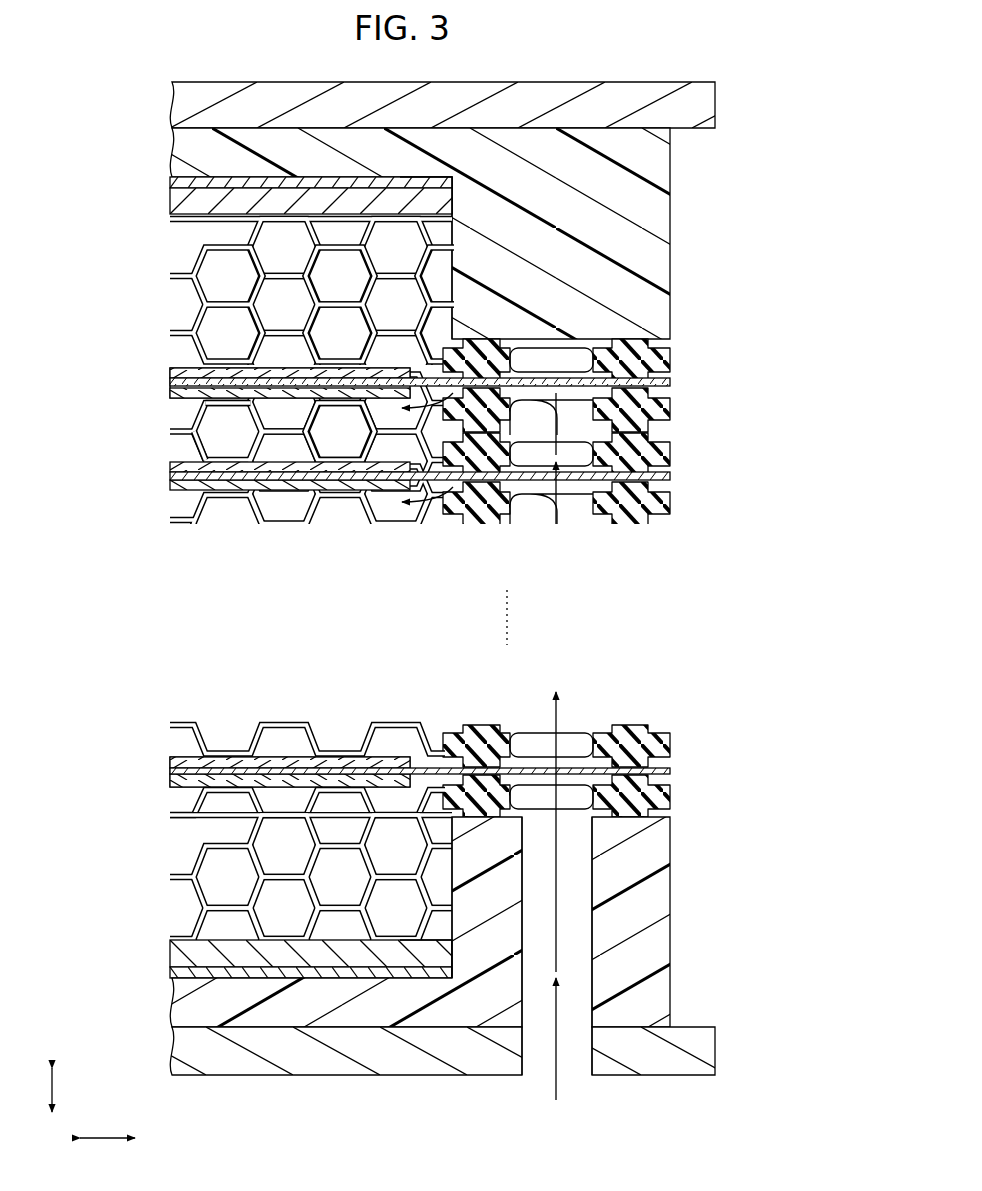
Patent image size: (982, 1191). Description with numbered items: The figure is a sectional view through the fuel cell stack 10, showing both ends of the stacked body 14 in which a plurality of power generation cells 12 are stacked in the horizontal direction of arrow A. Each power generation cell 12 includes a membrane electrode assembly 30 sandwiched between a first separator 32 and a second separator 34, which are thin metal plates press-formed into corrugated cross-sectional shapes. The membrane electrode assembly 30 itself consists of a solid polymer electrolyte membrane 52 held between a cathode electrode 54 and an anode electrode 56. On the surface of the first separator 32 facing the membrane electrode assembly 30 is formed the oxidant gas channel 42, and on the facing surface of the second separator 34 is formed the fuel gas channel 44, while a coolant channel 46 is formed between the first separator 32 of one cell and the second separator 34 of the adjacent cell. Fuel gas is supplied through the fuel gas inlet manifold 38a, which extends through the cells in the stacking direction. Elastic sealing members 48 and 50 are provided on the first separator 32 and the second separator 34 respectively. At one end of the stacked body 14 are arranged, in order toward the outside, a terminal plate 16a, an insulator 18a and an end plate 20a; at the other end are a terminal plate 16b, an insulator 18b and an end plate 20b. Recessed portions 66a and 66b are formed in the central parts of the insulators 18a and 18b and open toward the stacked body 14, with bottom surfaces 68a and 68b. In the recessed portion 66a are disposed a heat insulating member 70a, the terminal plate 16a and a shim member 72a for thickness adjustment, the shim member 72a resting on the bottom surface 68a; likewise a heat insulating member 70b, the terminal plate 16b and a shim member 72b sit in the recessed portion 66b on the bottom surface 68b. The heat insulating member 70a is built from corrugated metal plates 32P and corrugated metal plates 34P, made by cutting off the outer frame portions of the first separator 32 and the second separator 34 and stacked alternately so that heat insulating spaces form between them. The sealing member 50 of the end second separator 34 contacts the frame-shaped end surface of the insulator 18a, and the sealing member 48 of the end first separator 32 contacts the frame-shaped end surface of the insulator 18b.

The fuel cell stack 10 is at (481, 61).
The power generation cell 12 is at (391, 567).
The stacked body 14 is at (372, 567).
The terminal plate 16a is at (171, 956).
The terminal plate 16b is at (171, 201).
The insulator 18a is at (676, 941).
The insulator 18b is at (676, 257).
The end plate 20a is at (716, 1026).
The end plate 20b is at (718, 131).
The membrane electrode assembly 30 is at (409, 567).
The first separator 32 is at (190, 353).
The second separator 34 is at (190, 412).
The corrugated metal plate 32P is at (190, 236).
The corrugated metal plate 34P is at (186, 261).
The fuel gas inlet manifold 38a is at (573, 1055).
The oxidant gas channel 42 is at (243, 406).
The fuel gas channel 44 is at (237, 412).
The coolant channel 46 is at (362, 443).
The sealing member 48 is at (671, 360).
The sealing member 50 is at (671, 408).
The solid polymer electrolyte membrane 52 is at (304, 480).
The cathode electrode 54 is at (241, 473).
The anode electrode 56 is at (333, 489).
The recessed portion 66a is at (447, 882).
The recessed portion 66b is at (446, 284).
The bottom surface 68a is at (420, 967).
The bottom surface 68b is at (420, 201).
The heat insulating member 70a is at (103, 937).
The heat insulating member 70b is at (272, 577).
The shim member 72a is at (171, 972).
The shim member 72b is at (171, 183).